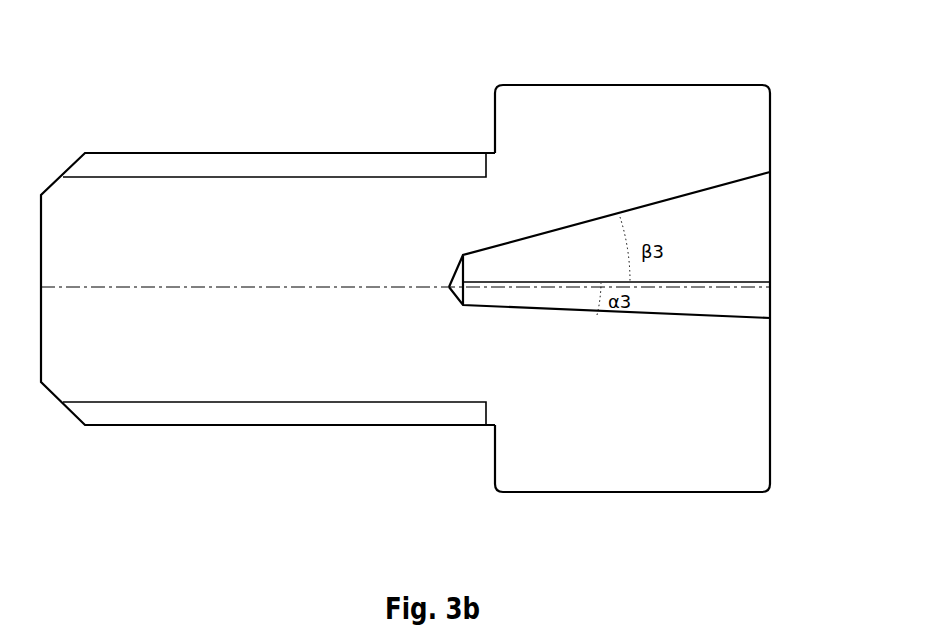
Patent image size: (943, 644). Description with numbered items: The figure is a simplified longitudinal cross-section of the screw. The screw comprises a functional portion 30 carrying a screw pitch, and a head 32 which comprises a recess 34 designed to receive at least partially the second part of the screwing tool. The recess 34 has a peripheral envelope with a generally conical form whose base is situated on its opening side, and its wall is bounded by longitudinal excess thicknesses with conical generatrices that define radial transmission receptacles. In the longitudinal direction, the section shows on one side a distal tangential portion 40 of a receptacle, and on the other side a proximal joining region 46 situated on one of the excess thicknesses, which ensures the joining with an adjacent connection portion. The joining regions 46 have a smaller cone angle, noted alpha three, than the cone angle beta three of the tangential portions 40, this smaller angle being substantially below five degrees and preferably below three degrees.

The functional portion 30 is at (243, 385).
The head 32 is at (658, 470).
The recess 34 is at (740, 191).
The distal tangential portion 40 is at (653, 206).
The proximal joining region 46 is at (740, 316).